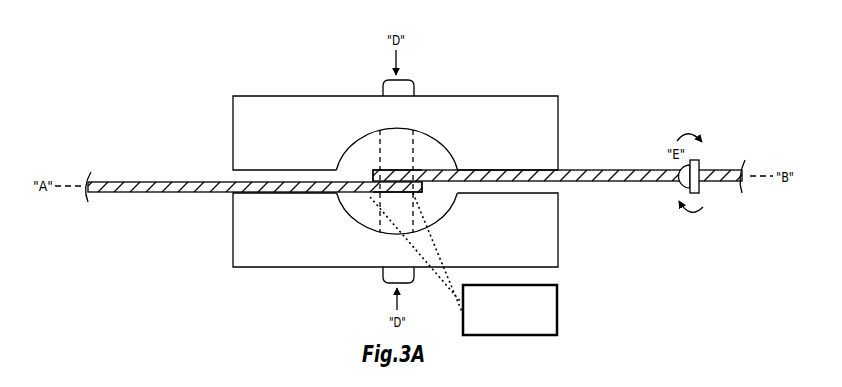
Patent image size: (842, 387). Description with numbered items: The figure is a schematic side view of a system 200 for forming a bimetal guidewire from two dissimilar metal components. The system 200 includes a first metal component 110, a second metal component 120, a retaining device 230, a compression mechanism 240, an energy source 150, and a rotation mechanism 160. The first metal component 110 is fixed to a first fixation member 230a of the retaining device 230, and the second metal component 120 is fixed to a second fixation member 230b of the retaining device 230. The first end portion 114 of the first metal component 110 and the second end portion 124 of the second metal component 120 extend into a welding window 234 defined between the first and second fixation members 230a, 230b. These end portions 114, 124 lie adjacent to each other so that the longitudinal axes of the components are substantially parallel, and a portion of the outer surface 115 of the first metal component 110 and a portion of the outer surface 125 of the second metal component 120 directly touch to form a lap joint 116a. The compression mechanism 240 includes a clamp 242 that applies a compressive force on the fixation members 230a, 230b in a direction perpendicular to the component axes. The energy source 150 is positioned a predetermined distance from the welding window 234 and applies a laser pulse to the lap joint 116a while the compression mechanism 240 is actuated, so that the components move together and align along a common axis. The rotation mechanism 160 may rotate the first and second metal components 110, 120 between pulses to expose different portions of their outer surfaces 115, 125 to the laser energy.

The system 200 is at (182, 80).
The first metal component 110 is at (134, 177).
The outer surface 115 is at (142, 193).
The first end portion 114 is at (385, 194).
The second metal component 120 is at (619, 166).
The outer surface 125 is at (600, 180).
The lap joint 116a is at (405, 165).
The second end portion 124 is at (398, 163).
The retaining device 230 is at (220, 135).
The first fixation member 230a is at (395, 230).
The second fixation member 230b is at (395, 133).
The welding window 234 is at (366, 148).
The compression mechanism 240 is at (418, 76).
The clamp 242 is at (383, 88).
The rotation mechanism 160 is at (703, 163).
The energy source 150 is at (463, 264).